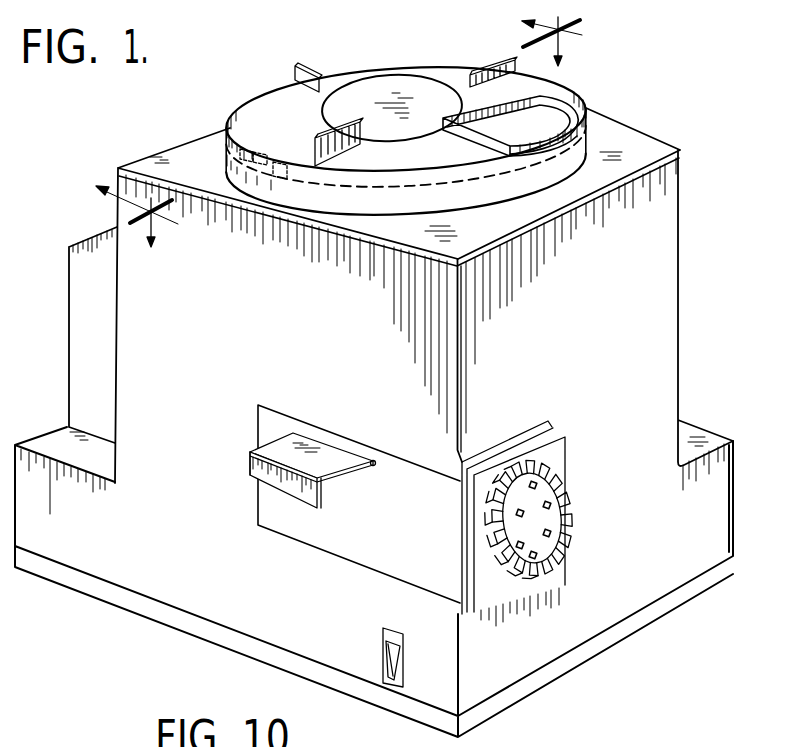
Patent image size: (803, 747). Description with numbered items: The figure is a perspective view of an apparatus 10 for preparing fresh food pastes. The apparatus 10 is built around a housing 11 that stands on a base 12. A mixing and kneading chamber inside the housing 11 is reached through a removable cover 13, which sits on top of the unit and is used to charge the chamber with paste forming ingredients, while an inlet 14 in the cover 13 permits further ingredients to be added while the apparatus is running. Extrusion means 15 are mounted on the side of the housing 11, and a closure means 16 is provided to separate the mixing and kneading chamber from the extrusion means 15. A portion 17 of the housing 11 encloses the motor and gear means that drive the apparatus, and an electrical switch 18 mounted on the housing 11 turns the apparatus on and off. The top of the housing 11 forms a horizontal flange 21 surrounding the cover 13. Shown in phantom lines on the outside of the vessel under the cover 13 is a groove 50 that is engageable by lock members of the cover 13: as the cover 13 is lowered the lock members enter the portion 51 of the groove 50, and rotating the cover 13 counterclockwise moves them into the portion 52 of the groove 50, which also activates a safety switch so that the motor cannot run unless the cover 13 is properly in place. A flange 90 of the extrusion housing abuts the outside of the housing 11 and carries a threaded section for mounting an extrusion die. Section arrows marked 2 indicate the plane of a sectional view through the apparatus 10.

The section line 2 is at (349, 132).
The apparatus 10 is at (727, 223).
The housing 11 is at (663, 308).
The base 12 is at (642, 618).
The removable cover 13 is at (266, 95).
The inlet 14 is at (528, 97).
The extrusion means 15 is at (373, 553).
The closure means 16 is at (250, 467).
The portion of the housing 17 is at (78, 313).
The electrical switch 18 is at (383, 662).
The horizontal flange 21 is at (152, 163).
The groove 50 is at (248, 170).
The portion of the groove 51 is at (231, 138).
The portion of the groove 52 is at (273, 182).
The flange 90 is at (553, 453).